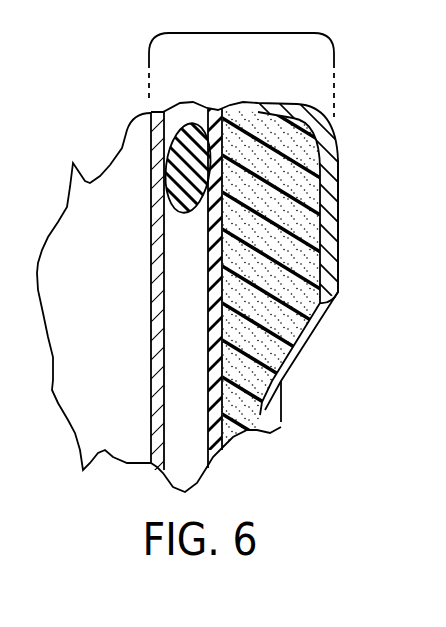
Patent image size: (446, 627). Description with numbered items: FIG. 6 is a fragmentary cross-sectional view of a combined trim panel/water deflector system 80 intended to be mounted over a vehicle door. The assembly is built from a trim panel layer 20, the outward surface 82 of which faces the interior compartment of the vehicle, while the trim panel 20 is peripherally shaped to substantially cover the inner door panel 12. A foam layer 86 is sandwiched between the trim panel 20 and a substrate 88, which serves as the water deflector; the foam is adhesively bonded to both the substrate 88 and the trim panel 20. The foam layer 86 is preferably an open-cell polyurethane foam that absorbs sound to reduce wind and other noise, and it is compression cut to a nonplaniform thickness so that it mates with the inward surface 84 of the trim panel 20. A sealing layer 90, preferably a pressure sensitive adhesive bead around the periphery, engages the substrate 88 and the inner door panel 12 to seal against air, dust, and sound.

The combined trim panel/water deflector system 80 is at (241, 60).
The inner door panel 12 is at (151, 363).
The substrate 88 is at (207, 398).
The foam layer 86 is at (248, 420).
The outward surface 82 is at (310, 350).
The inward surface 84 is at (330, 279).
The trim panel layer 20 is at (333, 323).
The sealing layer 90 is at (184, 213).